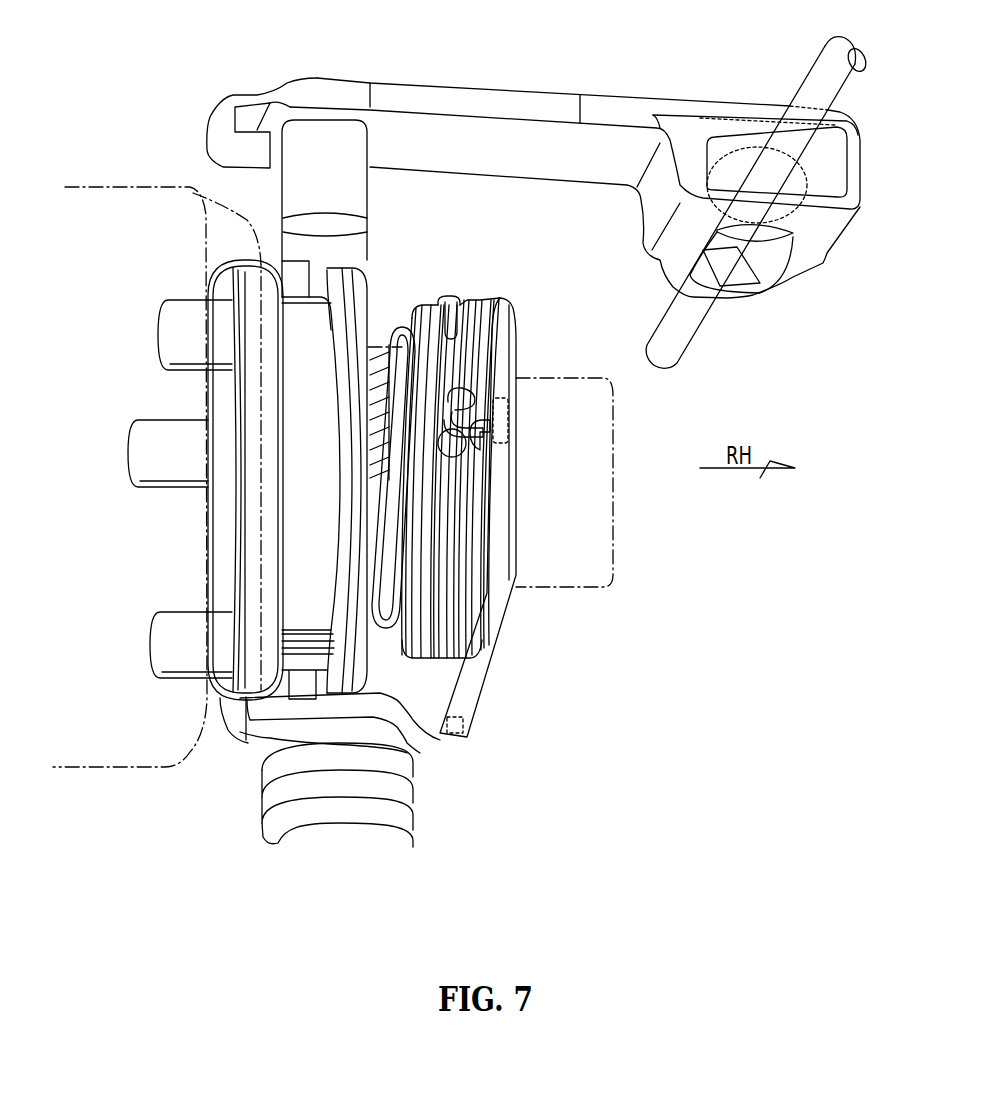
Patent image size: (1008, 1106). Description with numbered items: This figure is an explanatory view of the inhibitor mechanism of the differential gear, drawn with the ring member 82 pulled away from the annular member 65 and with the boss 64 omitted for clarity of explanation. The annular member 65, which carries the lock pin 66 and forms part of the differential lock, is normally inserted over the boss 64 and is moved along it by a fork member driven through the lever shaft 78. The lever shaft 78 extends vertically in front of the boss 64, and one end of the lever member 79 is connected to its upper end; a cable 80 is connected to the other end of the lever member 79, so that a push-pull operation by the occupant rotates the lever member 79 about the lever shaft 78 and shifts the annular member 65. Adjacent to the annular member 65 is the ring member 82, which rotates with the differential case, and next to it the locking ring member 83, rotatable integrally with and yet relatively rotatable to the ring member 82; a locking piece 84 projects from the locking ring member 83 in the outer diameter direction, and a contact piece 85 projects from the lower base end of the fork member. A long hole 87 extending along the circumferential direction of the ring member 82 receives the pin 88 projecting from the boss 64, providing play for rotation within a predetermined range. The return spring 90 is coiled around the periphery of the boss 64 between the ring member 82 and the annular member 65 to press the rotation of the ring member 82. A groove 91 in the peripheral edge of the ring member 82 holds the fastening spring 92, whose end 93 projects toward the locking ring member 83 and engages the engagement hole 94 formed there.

The boss 64 is at (370, 640).
The annular member 65 is at (342, 267).
The lock pin 66 is at (158, 340).
The lever shaft 78 is at (362, 253).
The lever member 79 is at (580, 103).
The cable 80 is at (807, 72).
The ring member 82 is at (473, 587).
The locking ring member 83 is at (483, 630).
The locking piece 84 is at (470, 723).
The contact piece 85 is at (443, 753).
The long hole 87 is at (477, 395).
The pin 88 is at (440, 445).
The return spring 90 is at (402, 322).
The groove 91 is at (460, 358).
The fastening spring 92 is at (443, 297).
The end 93 is at (483, 440).
The engagement hole 94 is at (510, 410).